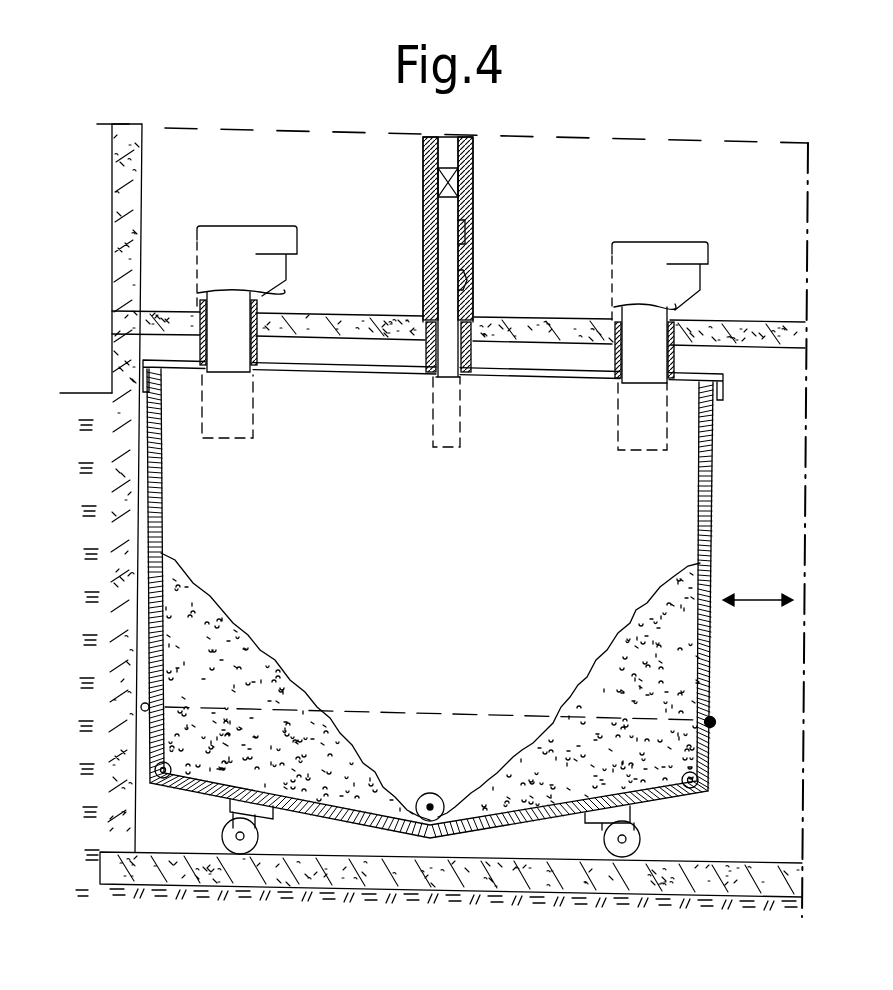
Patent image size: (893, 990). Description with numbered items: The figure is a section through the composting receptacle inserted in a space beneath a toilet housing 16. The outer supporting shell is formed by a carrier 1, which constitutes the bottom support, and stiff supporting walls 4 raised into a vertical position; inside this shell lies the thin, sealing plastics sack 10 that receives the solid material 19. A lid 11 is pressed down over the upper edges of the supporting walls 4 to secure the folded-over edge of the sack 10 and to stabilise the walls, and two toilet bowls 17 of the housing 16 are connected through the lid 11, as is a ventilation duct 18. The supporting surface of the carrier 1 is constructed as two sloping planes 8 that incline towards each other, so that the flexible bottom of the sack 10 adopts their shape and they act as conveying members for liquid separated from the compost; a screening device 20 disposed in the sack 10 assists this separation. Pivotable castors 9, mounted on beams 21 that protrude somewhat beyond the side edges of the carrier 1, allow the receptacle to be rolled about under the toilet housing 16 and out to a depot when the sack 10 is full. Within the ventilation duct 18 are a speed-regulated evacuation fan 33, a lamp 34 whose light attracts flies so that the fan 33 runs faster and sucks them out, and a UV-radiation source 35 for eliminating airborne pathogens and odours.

The carrier 1 is at (713, 743).
The supporting walls 4 is at (713, 443).
The sloping planes 8 is at (476, 870).
The pivotable castors 9 is at (605, 847).
The plastics sack 10 is at (698, 518).
The lid 11 is at (517, 383).
The toilet housing 16 is at (130, 173).
The toilet bowls 17 is at (245, 242).
The ventilation duct 18 is at (480, 195).
The solid material 19 is at (187, 607).
The screening device 20 is at (430, 793).
The beams 21 is at (585, 822).
The evacuation fan 33 is at (435, 180).
The lamp 34 is at (440, 283).
The UV-radiation source 35 is at (445, 225).